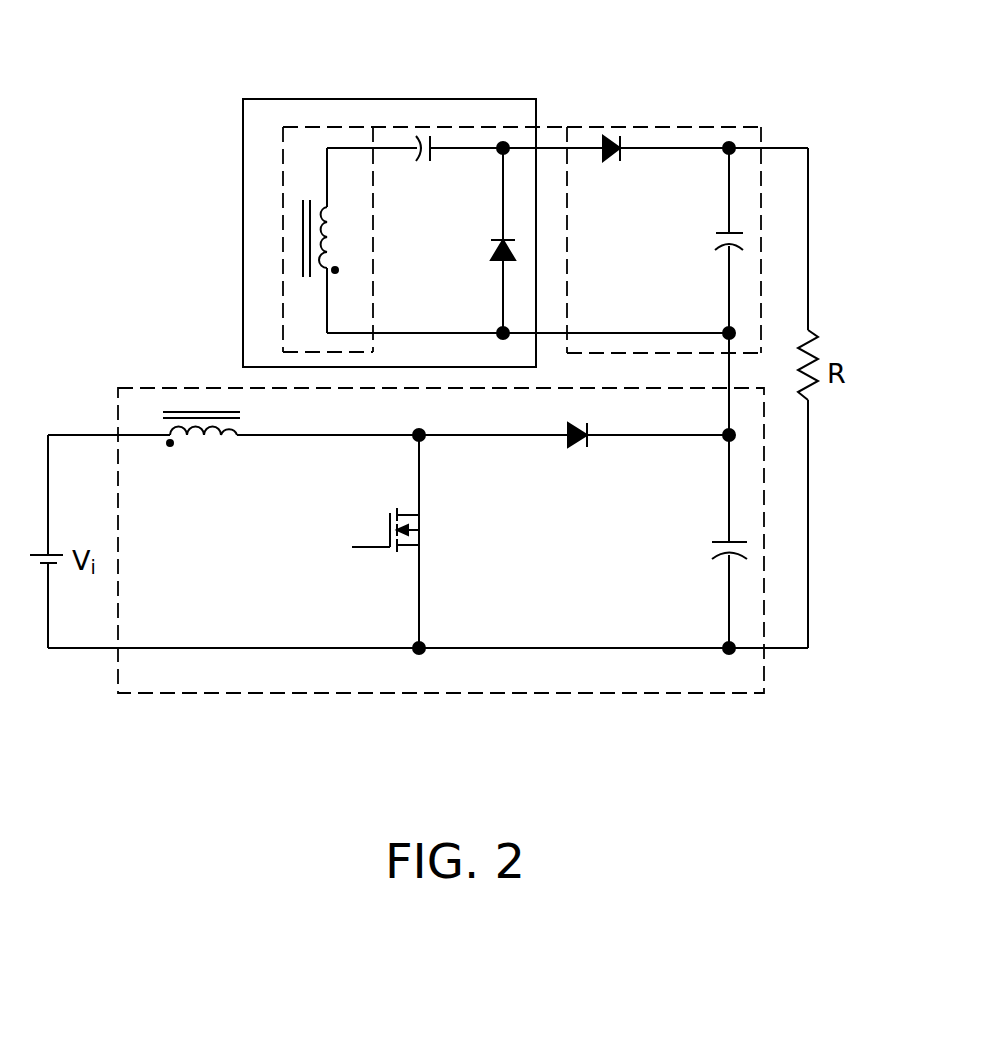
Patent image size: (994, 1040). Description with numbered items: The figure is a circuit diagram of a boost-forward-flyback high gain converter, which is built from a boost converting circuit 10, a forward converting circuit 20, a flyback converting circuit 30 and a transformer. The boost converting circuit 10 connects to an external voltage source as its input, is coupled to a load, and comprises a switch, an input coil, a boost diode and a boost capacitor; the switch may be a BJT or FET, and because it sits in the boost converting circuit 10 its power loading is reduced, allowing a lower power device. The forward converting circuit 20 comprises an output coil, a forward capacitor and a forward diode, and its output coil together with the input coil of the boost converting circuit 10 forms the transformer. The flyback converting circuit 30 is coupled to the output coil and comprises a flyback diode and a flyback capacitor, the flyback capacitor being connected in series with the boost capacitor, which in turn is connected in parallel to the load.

The boost converting circuit 10 is at (593, 693).
The forward converting circuit 20 is at (473, 113).
The flyback converting circuit 30 is at (675, 127).